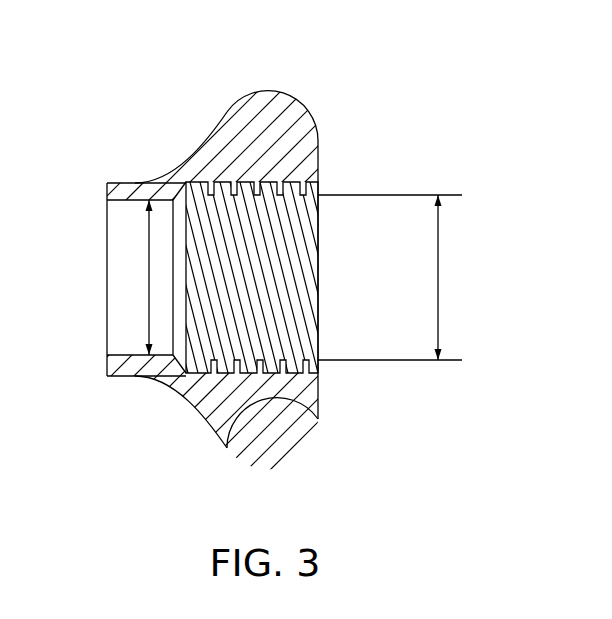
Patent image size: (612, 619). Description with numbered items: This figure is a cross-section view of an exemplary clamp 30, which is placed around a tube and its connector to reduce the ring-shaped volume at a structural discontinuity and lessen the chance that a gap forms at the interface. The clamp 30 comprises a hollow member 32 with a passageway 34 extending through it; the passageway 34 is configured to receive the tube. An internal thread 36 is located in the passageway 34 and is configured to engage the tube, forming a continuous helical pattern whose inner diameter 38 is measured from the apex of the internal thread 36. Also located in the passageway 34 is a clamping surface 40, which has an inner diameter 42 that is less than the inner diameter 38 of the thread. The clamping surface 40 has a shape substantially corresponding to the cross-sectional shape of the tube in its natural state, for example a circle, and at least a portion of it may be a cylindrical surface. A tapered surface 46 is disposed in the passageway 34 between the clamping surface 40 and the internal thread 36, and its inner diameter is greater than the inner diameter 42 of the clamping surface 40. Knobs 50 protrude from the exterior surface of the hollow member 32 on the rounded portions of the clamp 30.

The clamp 30 is at (306, 265).
The hollow member 32 is at (223, 103).
The passageway 34 is at (125, 242).
The internal thread 36 is at (298, 283).
The inner diameter 38 is at (438, 277).
The clamping surface 40 is at (108, 195).
The inner diameter 42 is at (148, 265).
The tapered surface 46 is at (182, 190).
The knobs 50 is at (260, 92).